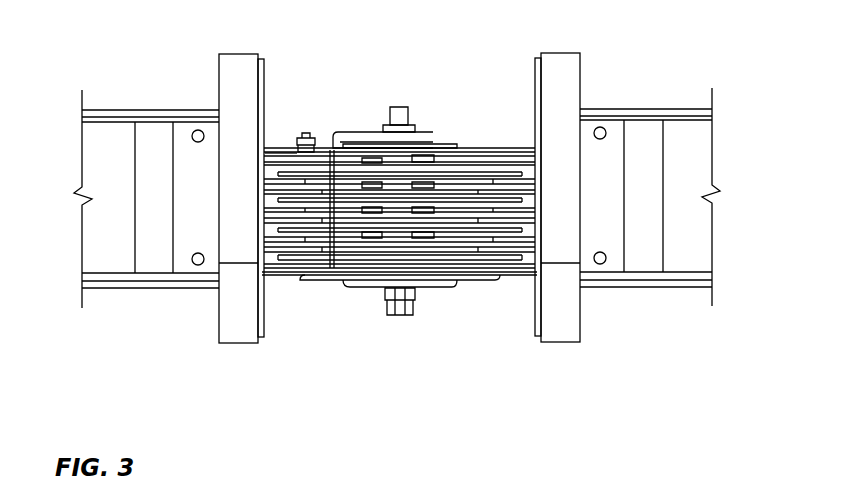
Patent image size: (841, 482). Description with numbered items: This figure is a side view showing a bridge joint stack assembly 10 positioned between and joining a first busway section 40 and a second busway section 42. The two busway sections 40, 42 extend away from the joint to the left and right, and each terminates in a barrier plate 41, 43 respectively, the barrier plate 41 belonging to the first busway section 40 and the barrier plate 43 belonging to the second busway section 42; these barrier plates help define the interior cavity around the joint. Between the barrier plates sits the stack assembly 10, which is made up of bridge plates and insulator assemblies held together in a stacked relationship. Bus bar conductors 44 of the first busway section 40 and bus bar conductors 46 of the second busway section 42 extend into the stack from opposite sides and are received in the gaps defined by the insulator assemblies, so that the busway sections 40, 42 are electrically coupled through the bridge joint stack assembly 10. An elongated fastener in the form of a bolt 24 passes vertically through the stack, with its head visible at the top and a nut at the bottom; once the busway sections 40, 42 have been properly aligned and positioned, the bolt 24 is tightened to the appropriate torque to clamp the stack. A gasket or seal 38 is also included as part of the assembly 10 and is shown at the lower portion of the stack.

The bridge joint stack assembly 10 is at (399, 201).
The bolt 24 is at (398, 316).
The gasket or seal 38 is at (457, 284).
The first busway section 40 is at (125, 298).
The barrier plate 41 is at (243, 343).
The second busway section 42 is at (669, 297).
The barrier plate 43 is at (562, 342).
The bus bar conductors 44 is at (352, 230).
The bus bar conductors 46 is at (460, 210).